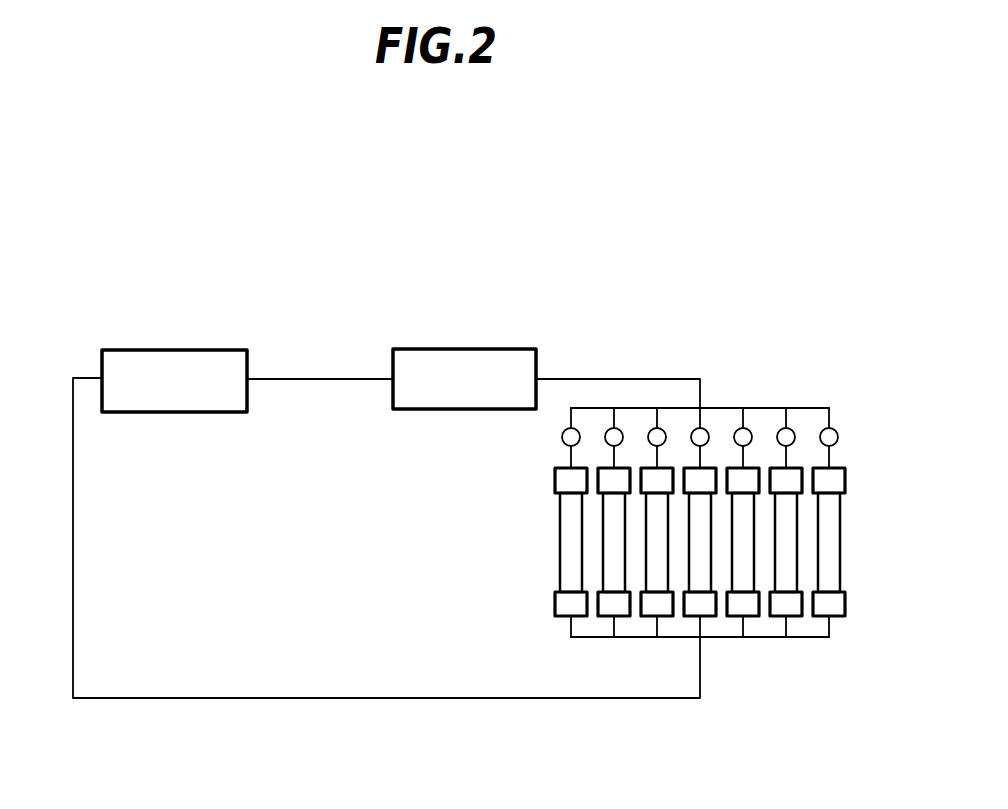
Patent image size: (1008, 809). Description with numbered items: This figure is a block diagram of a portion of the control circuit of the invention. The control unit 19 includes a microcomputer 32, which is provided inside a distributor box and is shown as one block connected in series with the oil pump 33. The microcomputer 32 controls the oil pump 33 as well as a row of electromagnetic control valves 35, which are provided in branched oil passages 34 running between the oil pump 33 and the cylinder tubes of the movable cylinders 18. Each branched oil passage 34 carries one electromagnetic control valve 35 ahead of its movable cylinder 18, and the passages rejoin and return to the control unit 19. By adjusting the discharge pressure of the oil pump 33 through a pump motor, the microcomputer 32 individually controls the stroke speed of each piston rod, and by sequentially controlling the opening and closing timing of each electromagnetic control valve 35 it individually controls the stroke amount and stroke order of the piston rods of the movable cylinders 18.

The control unit 19 is at (84, 352).
The microcomputer 32 is at (196, 350).
The oil pump 33 is at (463, 349).
The electromagnetic control valve 35 is at (561, 434).
The branched oil passage 34 is at (567, 460).
The movable cylinder 18 is at (560, 552).